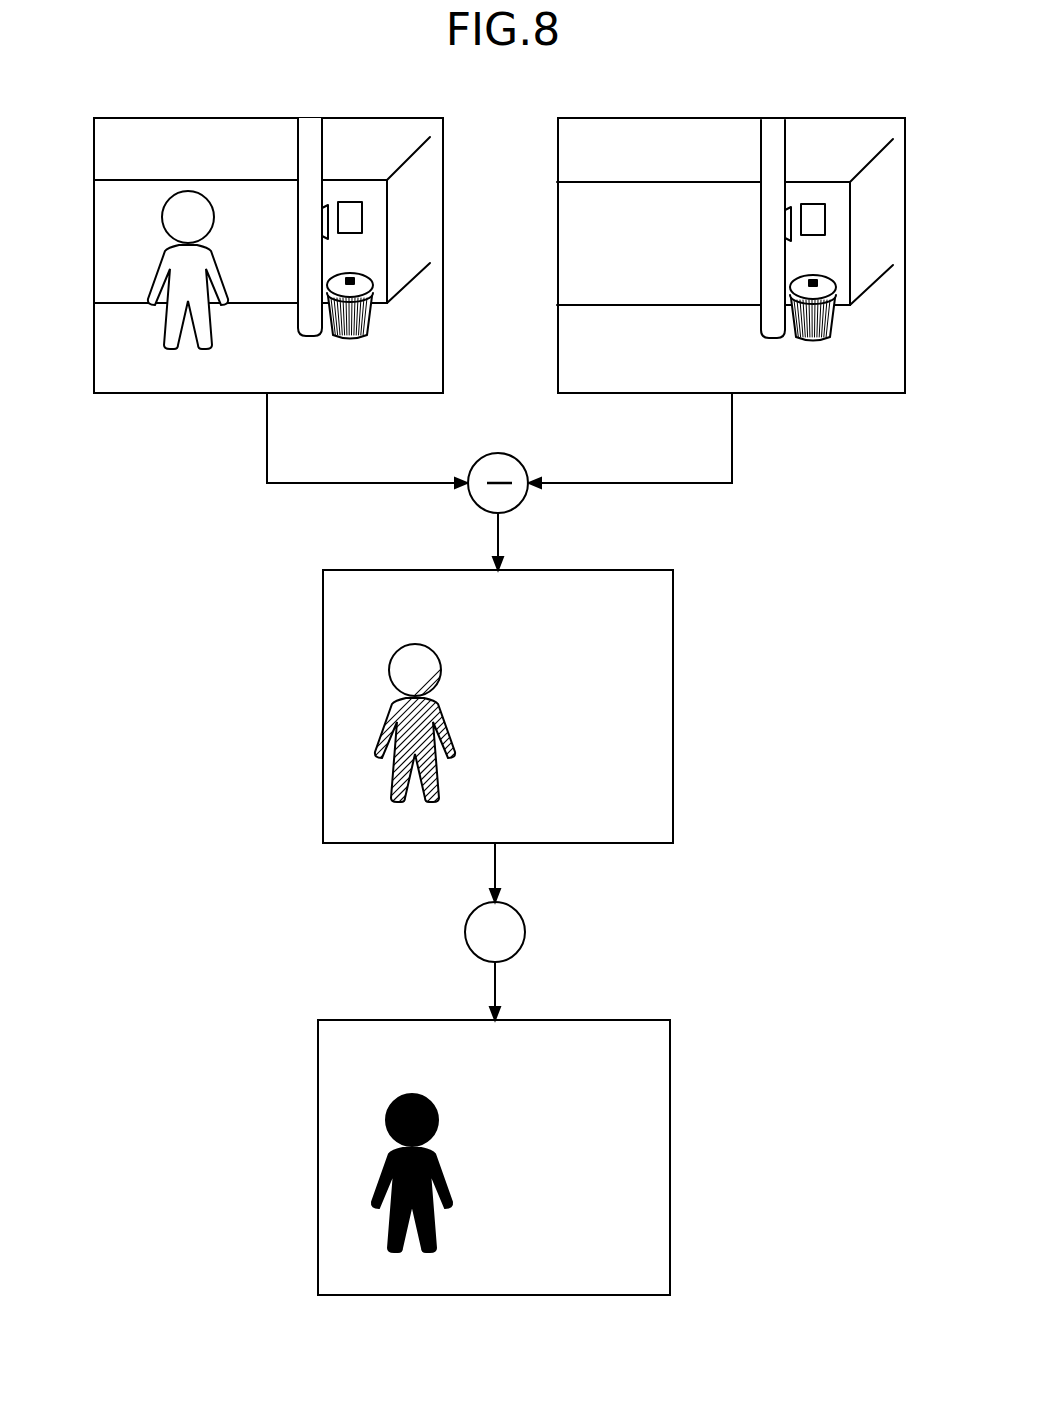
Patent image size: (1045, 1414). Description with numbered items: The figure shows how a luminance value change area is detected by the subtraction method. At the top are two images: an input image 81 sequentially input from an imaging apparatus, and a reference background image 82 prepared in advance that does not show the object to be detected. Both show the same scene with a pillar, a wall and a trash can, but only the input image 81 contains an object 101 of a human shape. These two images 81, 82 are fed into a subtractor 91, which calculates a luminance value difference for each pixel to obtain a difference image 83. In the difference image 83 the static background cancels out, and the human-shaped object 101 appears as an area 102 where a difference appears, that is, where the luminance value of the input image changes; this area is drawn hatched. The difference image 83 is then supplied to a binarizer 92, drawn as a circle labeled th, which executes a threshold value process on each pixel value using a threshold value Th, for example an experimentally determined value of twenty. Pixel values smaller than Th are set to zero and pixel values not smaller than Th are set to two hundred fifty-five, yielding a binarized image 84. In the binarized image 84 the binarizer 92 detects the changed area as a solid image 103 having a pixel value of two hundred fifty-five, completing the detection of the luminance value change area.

The input image 81 is at (380, 118).
The reference background image 82 is at (845, 118).
The difference image 83 is at (608, 570).
The binarized image 84 is at (607, 1020).
The subtractor 91 is at (498, 453).
The binarizer 92 is at (525, 932).
The object of a human shape 101 is at (214, 217).
The area where a difference appears 102 is at (441, 670).
The image having a pixel value of 255 103 is at (438, 1120).